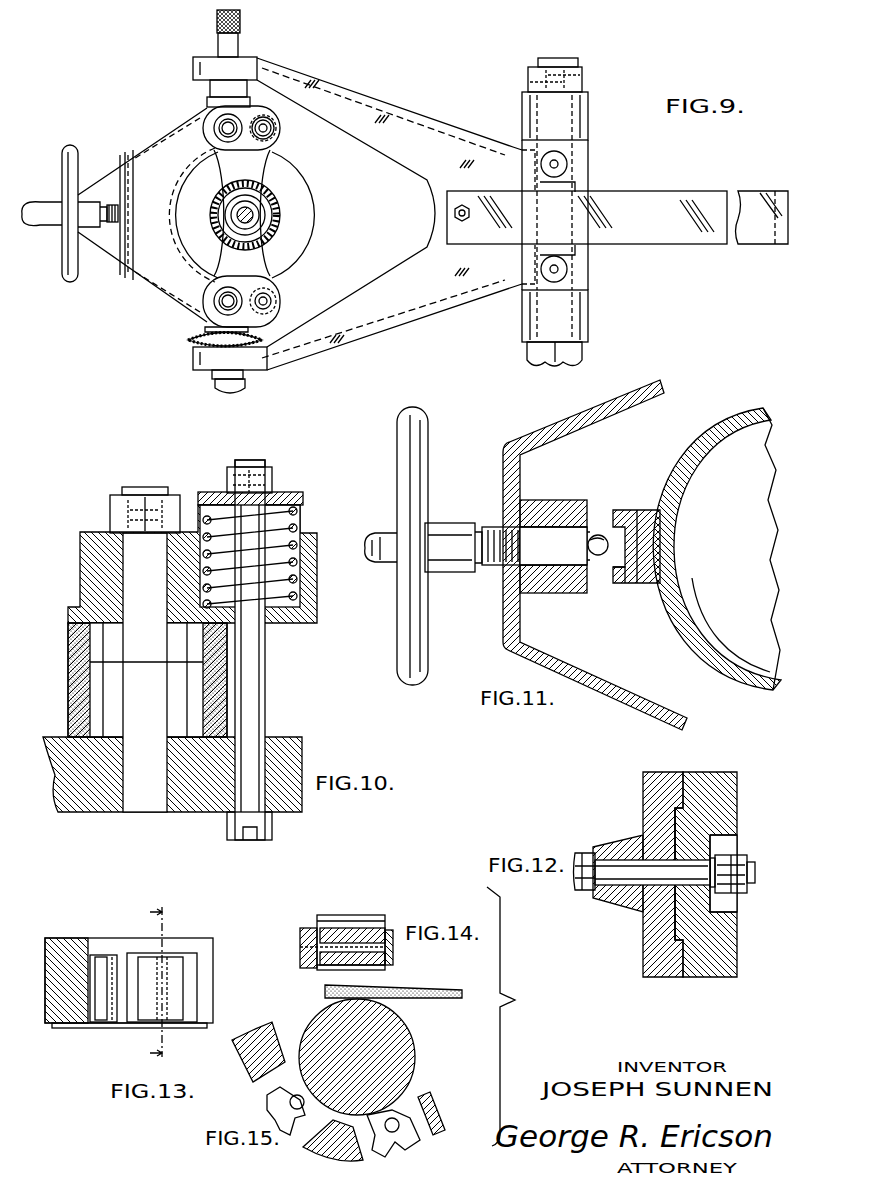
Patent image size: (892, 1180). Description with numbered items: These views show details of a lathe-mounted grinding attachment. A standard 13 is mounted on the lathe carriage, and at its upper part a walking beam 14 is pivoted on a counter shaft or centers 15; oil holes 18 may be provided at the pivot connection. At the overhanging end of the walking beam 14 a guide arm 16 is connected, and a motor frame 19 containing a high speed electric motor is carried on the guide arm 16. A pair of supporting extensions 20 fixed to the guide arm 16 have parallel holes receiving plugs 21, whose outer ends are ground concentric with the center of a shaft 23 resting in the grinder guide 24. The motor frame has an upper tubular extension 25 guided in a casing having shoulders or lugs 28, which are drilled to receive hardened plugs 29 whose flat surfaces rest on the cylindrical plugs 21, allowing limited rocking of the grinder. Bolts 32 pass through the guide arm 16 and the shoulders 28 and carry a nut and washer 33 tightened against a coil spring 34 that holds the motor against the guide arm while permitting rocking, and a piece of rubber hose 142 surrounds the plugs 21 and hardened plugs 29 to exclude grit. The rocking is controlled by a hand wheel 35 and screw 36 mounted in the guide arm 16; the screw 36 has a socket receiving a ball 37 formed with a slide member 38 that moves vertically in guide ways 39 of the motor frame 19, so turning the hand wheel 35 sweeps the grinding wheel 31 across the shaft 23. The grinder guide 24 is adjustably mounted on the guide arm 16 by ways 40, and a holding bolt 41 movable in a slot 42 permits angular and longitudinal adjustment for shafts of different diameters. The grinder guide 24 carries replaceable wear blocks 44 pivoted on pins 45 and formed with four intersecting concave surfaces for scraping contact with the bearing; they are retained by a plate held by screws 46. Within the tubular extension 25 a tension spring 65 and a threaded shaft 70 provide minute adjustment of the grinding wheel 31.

In FIG. 9, the standard 13 is at (590, 112).
In FIG. 9, the walking beam 14 is at (382, 88).
In FIG. 13, the walking beam 14 is at (136, 987).
In FIG. 9, the counter shaft or centers 15 is at (575, 350).
In FIG. 9, the guide arm 16 is at (170, 126).
In FIG. 11, the guide arm 16 is at (525, 432).
In FIG. 12, the guide arm 16 is at (650, 794).
In FIG. 9, the oil holes 18 is at (565, 160).
In FIG. 9, the motor frame 19 is at (312, 190).
In FIG. 11, the motor frame 19 is at (680, 640).
In FIG. 10, the supporting extensions 20 is at (88, 812).
In FIG. 9, the plugs 21 is at (278, 212).
In FIG. 10, the plugs 21 is at (143, 718).
In FIG. 15, the shaft 23 is at (415, 1045).
In FIG. 12, the grinder guide 24 is at (725, 941).
In FIG. 13, the grinder guide 24 is at (50, 982).
In FIG. 14, the grinder guide 24 is at (308, 928).
In FIG. 15, the grinder guide 24 is at (260, 1035).
In FIG. 9, the upper tubular extension 25 is at (270, 228).
In FIG. 9, the shoulders or lugs 28 is at (230, 152).
In FIG. 10, the shoulders or lugs 28 is at (90, 578).
In FIG. 9, the hardened plugs 29 is at (225, 132).
In FIG. 10, the hardened plugs 29 is at (162, 644).
In FIG. 14, the grinding wheel 31 is at (462, 993).
In FIG. 9, the bolts 32 is at (268, 128).
In FIG. 10, the bolts 32 is at (260, 687).
In FIG. 9, the nut and washer 33 is at (275, 146).
In FIG. 10, the nut and washer 33 is at (278, 480).
In FIG. 10, the coil spring 34 is at (295, 520).
In FIG. 9, the hand wheel 35 is at (68, 150).
In FIG. 11, the hand wheel 35 is at (420, 452).
In FIG. 9, the screw 36 is at (112, 230).
In FIG. 11, the screw 36 is at (490, 525).
In FIG. 11, the ball 37 is at (598, 533).
In FIG. 11, the slide member 38 is at (634, 510).
In FIG. 11, the guide ways 39 is at (630, 584).
In FIG. 12, the ways 40 is at (680, 945).
In FIG. 12, the holding bolt 41 is at (584, 889).
In FIG. 12, the slot 42 is at (690, 858).
In FIG. 13, the wear blocks 44 is at (97, 955).
In FIG. 14, the wear blocks 44 is at (370, 918).
In FIG. 15, the wear blocks 44 is at (270, 1104).
In FIG. 14, the pins 45 is at (300, 945).
In FIG. 15, the pins 45 is at (283, 1090).
In FIG. 13, the screws 46 is at (105, 1030).
In FIG. 9, the tension spring 65 is at (233, 220).
In FIG. 9, the shaft 70 is at (244, 206).
In FIG. 10, the rubber hose 142 is at (72, 697).